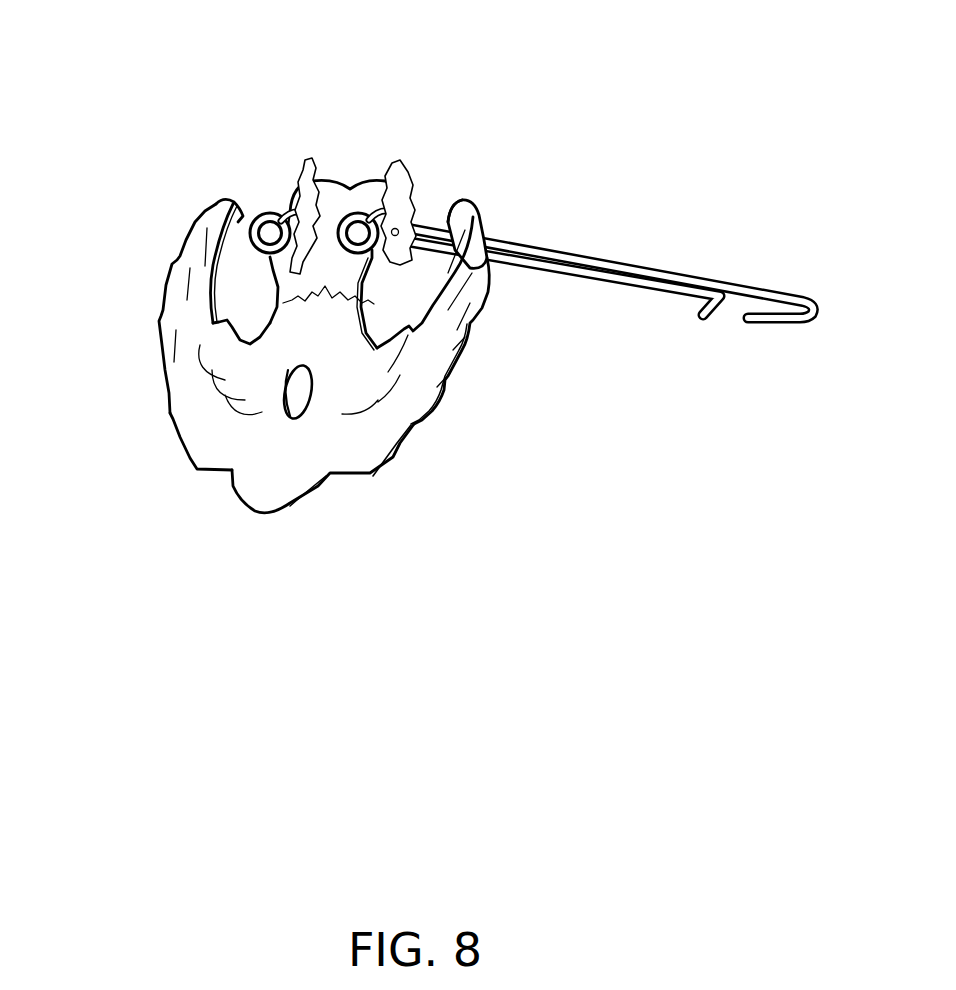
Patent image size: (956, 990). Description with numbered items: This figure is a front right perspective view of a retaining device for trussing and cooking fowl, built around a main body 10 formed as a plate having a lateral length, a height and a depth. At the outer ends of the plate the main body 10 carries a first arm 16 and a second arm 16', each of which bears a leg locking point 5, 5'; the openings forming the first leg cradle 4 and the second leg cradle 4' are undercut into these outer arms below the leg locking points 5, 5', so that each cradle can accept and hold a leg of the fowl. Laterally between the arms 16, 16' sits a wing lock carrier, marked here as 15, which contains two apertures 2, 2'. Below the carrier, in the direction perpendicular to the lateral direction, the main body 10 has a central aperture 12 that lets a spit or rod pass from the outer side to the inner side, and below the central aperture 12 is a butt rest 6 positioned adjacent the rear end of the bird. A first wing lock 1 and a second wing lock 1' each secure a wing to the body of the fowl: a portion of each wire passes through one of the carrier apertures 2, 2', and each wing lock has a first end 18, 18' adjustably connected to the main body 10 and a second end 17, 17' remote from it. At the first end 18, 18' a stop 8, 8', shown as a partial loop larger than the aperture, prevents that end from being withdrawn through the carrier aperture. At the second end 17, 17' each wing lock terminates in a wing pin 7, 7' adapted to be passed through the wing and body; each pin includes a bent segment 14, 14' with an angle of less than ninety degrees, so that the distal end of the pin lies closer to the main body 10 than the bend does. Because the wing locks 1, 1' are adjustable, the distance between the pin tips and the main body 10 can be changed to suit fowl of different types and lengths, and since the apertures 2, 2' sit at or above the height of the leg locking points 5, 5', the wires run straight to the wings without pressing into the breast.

The first wing lock 1 is at (556, 359).
The second wing lock 1' is at (602, 196).
The wing lock carrier aperture 2 is at (301, 152).
The wing lock carrier aperture 2' is at (424, 148).
The first leg cradle 4 is at (157, 366).
The second leg cradle 4' is at (456, 334).
The leg locking point 5 is at (145, 261).
The leg locking point 5' is at (476, 148).
The butt rest 6 is at (250, 520).
The wing pin 7 is at (695, 416).
The wing pin 7' is at (774, 427).
The stop 8 is at (262, 163).
The stop 8' is at (373, 163).
The main body 10 is at (168, 425).
The central aperture 12 is at (300, 397).
The bent segment 14 is at (718, 386).
The bent segment 14' is at (814, 390).
The head piece 15 is at (351, 188).
The first arm 16 is at (126, 308).
The second arm 16' is at (481, 312).
The second end 17 is at (660, 382).
The second end 17' is at (771, 187).
The first end 18 is at (301, 290).
The first end 18' is at (388, 300).